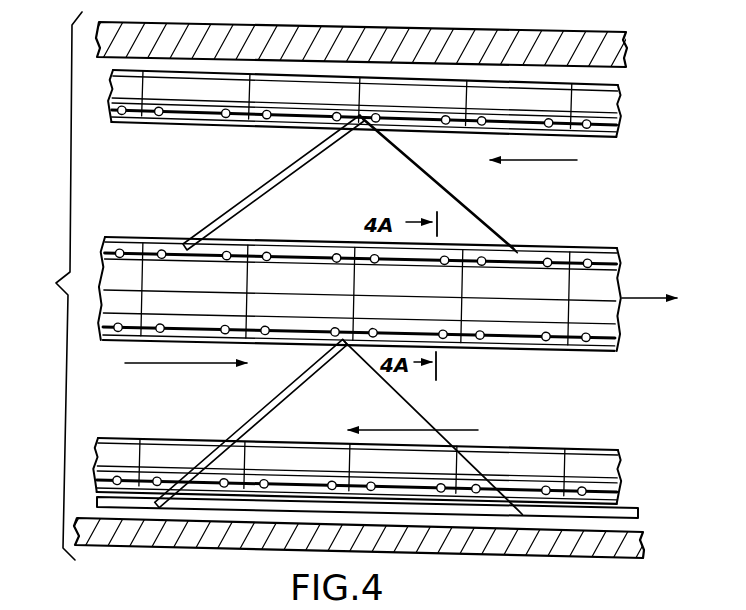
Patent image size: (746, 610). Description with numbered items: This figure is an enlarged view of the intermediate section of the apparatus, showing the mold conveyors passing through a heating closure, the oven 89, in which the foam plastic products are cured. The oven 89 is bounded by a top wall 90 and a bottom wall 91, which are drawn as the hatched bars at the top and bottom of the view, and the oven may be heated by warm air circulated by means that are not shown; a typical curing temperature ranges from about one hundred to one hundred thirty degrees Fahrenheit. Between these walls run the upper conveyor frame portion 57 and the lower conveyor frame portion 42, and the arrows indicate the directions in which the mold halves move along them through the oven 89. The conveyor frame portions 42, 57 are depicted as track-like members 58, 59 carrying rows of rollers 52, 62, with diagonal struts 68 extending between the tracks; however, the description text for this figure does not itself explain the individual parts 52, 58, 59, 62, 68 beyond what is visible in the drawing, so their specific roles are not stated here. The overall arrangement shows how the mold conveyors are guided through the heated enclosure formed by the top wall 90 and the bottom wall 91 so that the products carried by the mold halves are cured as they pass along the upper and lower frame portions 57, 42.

The lower conveyor frame portion 42 is at (567, 412).
The rollers 52 is at (212, 313).
The upper conveyor frame portion 57 is at (557, 205).
The intermediate roller track 58 is at (577, 240).
The upper roller track 59 is at (232, 128).
The rollers 62 is at (210, 125).
The diagonal struts 68 is at (268, 191).
The oven 89 is at (51, 286).
The top wall 90 is at (441, 42).
The bottom wall 91 is at (148, 547).